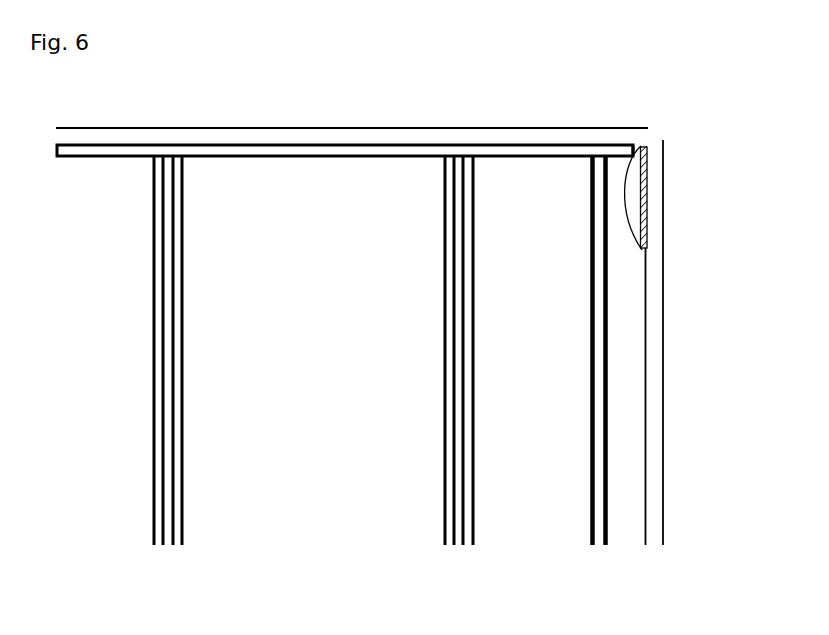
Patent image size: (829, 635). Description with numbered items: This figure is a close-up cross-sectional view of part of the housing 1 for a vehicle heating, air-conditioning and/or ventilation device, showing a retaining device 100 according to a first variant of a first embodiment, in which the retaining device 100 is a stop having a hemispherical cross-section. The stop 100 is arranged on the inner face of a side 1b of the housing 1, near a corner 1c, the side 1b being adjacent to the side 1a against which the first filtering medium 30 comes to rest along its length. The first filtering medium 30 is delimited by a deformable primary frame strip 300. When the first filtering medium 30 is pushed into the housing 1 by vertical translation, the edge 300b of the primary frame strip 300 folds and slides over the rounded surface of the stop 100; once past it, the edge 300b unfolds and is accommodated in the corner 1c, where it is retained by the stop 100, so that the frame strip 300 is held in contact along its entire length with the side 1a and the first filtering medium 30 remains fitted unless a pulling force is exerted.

The housing 1 is at (668, 310).
The side of the housing 1a is at (303, 133).
The side of the housing 1b is at (658, 370).
The corner of the housing 1c is at (647, 140).
The first filtering medium 30 is at (557, 450).
The retaining device 100 is at (637, 198).
The primary frame strip 300 is at (403, 143).
The edge of the deformable primary frame strip 300b is at (623, 152).